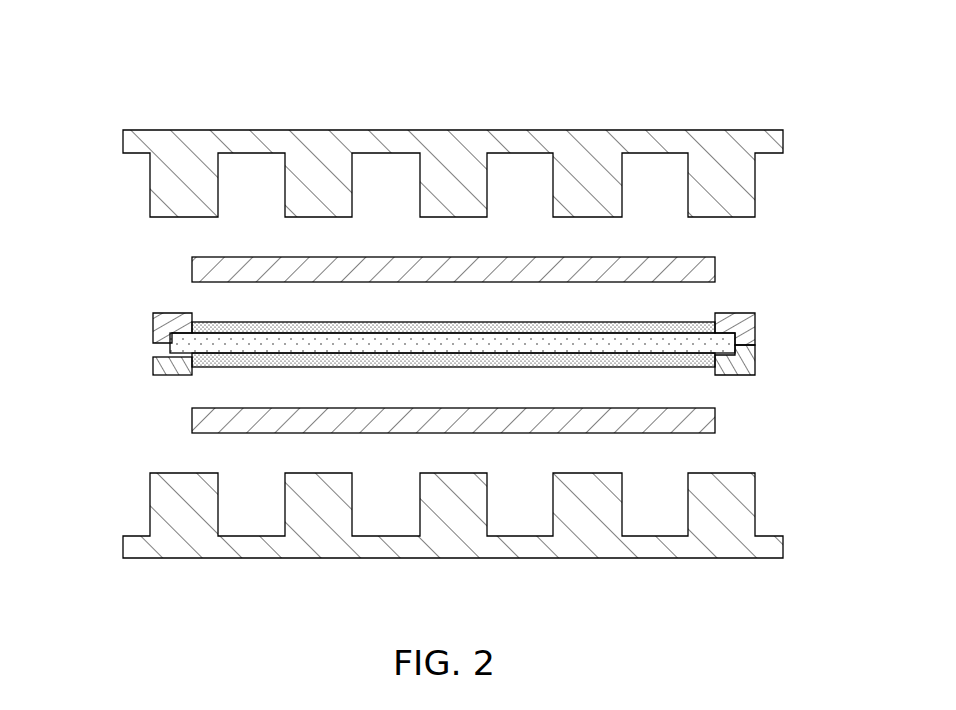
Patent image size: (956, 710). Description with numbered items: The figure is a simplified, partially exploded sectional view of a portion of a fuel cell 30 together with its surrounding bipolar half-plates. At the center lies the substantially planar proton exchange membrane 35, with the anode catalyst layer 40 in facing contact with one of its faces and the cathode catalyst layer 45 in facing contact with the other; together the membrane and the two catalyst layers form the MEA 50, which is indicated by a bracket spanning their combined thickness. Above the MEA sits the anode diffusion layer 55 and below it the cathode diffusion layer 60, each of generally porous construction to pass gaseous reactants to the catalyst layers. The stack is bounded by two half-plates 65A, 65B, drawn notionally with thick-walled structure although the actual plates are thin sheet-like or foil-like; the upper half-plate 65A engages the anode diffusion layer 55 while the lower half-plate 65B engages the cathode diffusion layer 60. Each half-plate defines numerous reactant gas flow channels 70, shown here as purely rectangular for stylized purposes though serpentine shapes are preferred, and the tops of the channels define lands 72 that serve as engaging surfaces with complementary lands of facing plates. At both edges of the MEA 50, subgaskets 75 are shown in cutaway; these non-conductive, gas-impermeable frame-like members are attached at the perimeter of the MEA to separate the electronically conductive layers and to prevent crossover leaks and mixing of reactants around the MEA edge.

The fuel cell 30 is at (612, 103).
The half-plate 65A is at (792, 139).
The half-plate 65B is at (121, 551).
The reactant gas flow channels 70 is at (671, 508).
The lands 72 is at (750, 237).
The anode diffusion layer 55 is at (192, 270).
The cathode diffusion layer 60 is at (192, 420).
The MEA 50 is at (758, 313).
The anode catalyst layer 40 is at (297, 322).
The proton exchange membrane 35 is at (172, 345).
The cathode catalyst layer 45 is at (297, 367).
The subgaskets 75 is at (153, 325).